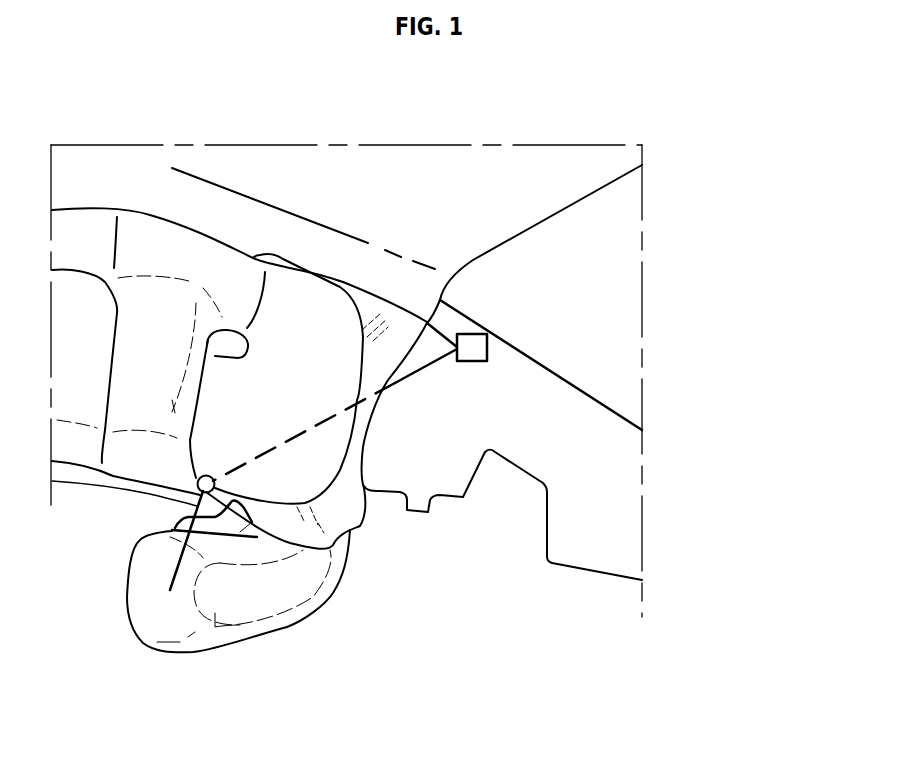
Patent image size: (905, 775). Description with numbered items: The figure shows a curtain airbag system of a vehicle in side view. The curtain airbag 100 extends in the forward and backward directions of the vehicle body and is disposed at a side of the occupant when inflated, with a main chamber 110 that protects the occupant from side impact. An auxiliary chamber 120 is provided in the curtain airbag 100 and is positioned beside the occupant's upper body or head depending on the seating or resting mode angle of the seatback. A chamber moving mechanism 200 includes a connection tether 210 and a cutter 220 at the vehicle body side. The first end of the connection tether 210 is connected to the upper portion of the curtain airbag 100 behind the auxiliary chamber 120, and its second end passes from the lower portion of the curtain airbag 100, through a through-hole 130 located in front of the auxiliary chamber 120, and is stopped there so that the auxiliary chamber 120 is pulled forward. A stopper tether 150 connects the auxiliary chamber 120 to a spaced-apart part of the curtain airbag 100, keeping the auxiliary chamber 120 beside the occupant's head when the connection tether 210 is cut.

The curtain airbag 100 is at (212, 224).
The main chamber 110 is at (302, 333).
The auxiliary chamber 120 is at (215, 613).
The through-hole 130 is at (200, 484).
The stopper tether 150 is at (218, 503).
The chamber moving mechanism 200 is at (525, 399).
The connection tether 210 is at (363, 393).
The cutter 220 is at (480, 348).